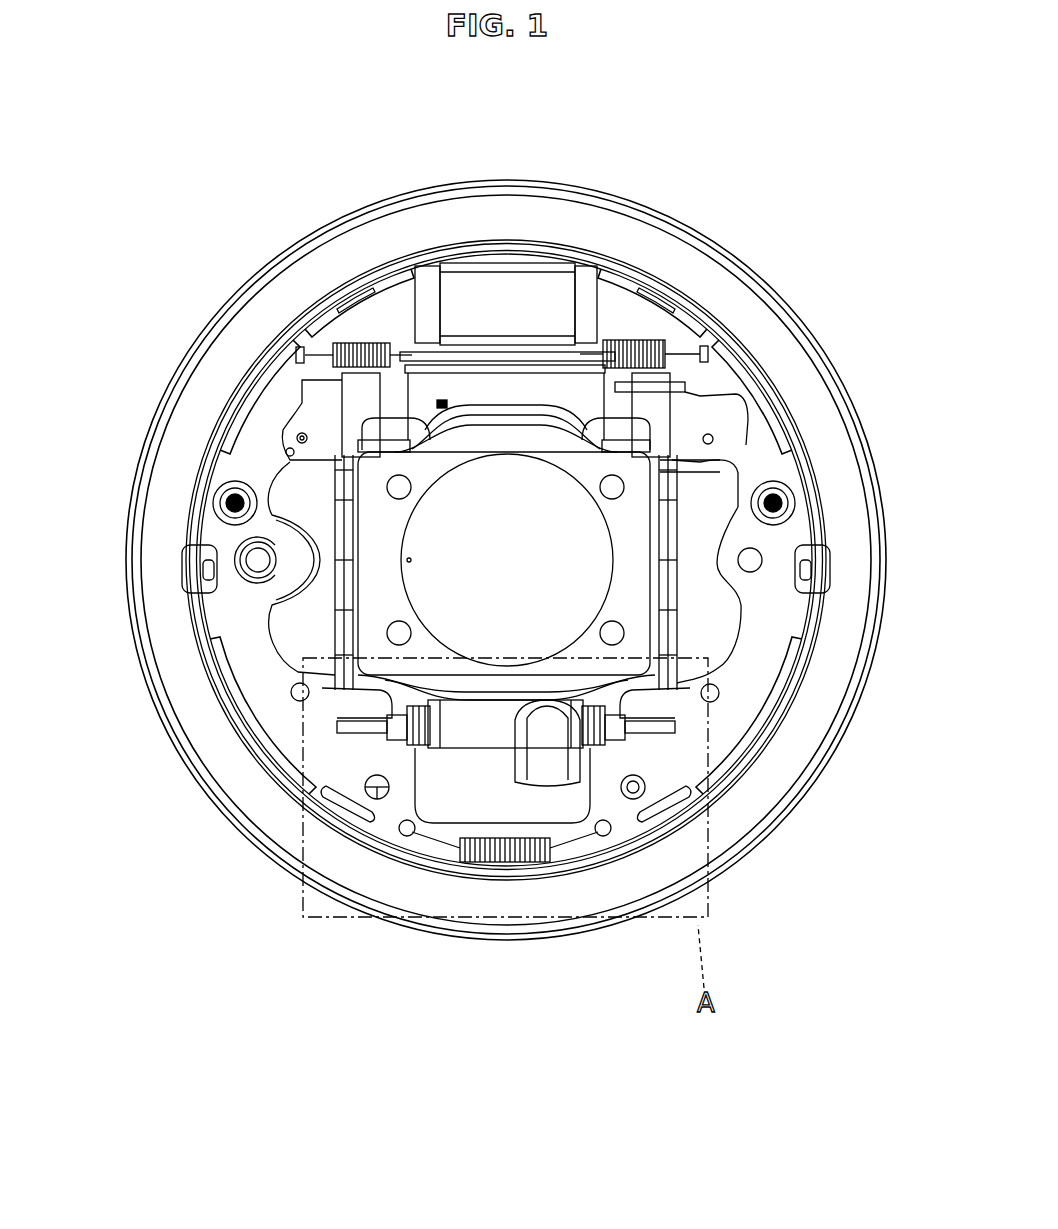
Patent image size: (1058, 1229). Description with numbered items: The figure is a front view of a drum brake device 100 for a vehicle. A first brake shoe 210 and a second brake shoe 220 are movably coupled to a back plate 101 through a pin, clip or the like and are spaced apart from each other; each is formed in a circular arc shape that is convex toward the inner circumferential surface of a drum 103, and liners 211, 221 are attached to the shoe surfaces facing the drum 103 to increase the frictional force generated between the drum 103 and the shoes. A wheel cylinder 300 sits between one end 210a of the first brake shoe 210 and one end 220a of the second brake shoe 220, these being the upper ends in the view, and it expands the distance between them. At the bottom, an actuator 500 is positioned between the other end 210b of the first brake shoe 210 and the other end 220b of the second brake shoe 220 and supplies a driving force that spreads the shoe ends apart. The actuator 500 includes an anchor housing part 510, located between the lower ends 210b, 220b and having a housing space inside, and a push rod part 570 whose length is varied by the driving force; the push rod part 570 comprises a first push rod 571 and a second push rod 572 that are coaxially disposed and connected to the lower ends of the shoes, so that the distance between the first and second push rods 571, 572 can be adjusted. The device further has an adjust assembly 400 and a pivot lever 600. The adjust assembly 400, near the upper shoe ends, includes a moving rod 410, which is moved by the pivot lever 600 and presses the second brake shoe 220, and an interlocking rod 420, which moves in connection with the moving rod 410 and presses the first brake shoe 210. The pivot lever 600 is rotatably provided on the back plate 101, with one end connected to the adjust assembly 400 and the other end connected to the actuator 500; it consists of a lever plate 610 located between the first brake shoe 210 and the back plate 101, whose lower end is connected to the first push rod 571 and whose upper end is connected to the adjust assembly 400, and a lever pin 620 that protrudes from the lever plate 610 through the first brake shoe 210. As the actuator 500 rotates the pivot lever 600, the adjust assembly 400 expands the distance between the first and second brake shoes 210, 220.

The drum brake device 100 is at (118, 106).
The back plate 101 is at (768, 280).
The drum 103 is at (185, 575).
The first brake shoe 210 is at (245, 556).
The one end of the first brake shoe 210a is at (383, 303).
The other end of the first brake shoe 210b is at (418, 752).
The liner 211 is at (222, 440).
The second brake shoe 220 is at (756, 562).
The one end of the second brake shoe 220a is at (620, 303).
The other end of the second brake shoe 220b is at (600, 752).
The liner 221 is at (795, 445).
The wheel cylinder 300 is at (497, 298).
The adjust assembly 400 is at (539, 392).
The moving rod 410 is at (673, 382).
The interlocking rod 420 is at (330, 383).
The actuator 500 is at (438, 903).
The anchor housing part 510 is at (487, 723).
The push rod part 570 is at (438, 855).
The first push rod 571 is at (382, 742).
The second push rod 572 is at (677, 730).
The pivot lever 600 is at (93, 757).
The lever plate 610 is at (293, 623).
The lever pin 620 is at (260, 561).